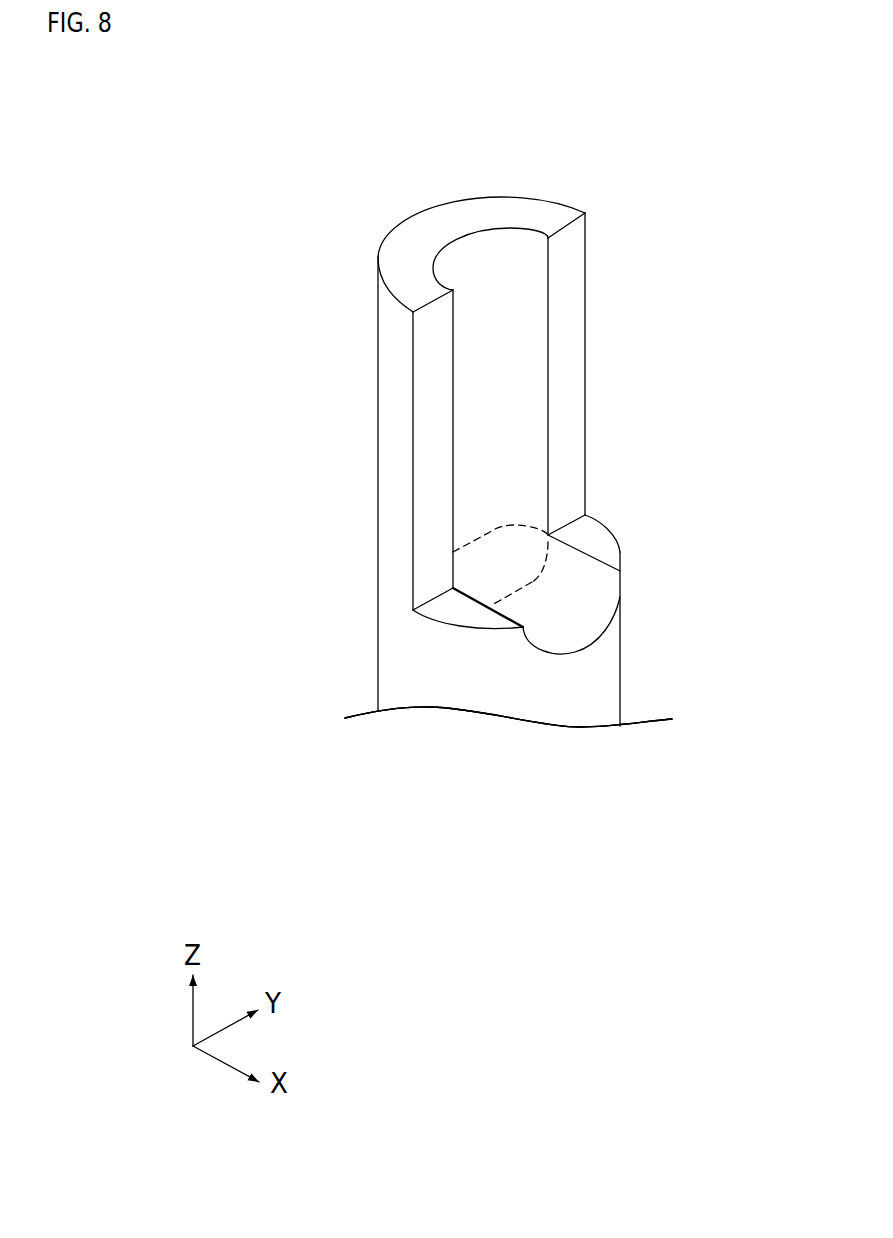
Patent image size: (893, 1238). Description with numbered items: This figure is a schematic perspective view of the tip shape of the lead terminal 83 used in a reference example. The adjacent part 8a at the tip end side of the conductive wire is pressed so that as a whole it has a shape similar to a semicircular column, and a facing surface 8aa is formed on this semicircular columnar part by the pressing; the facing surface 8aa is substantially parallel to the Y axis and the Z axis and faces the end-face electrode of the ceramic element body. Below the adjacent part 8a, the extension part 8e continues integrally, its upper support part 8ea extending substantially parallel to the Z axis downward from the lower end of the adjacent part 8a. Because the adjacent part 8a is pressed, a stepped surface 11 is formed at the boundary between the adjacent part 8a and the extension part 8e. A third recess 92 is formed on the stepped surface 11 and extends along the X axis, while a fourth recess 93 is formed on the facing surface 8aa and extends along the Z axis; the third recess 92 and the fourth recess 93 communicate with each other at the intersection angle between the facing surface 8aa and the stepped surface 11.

The adjacent part 8a is at (403, 387).
The facing surface 8aa is at (565, 277).
The fourth recess 93 is at (481, 448).
The stepped surface 11 is at (598, 542).
The third recess 92 is at (585, 612).
The lead terminal 83 is at (640, 677).
The extension part 8e is at (447, 690).
The upper support part 8ea is at (447, 790).